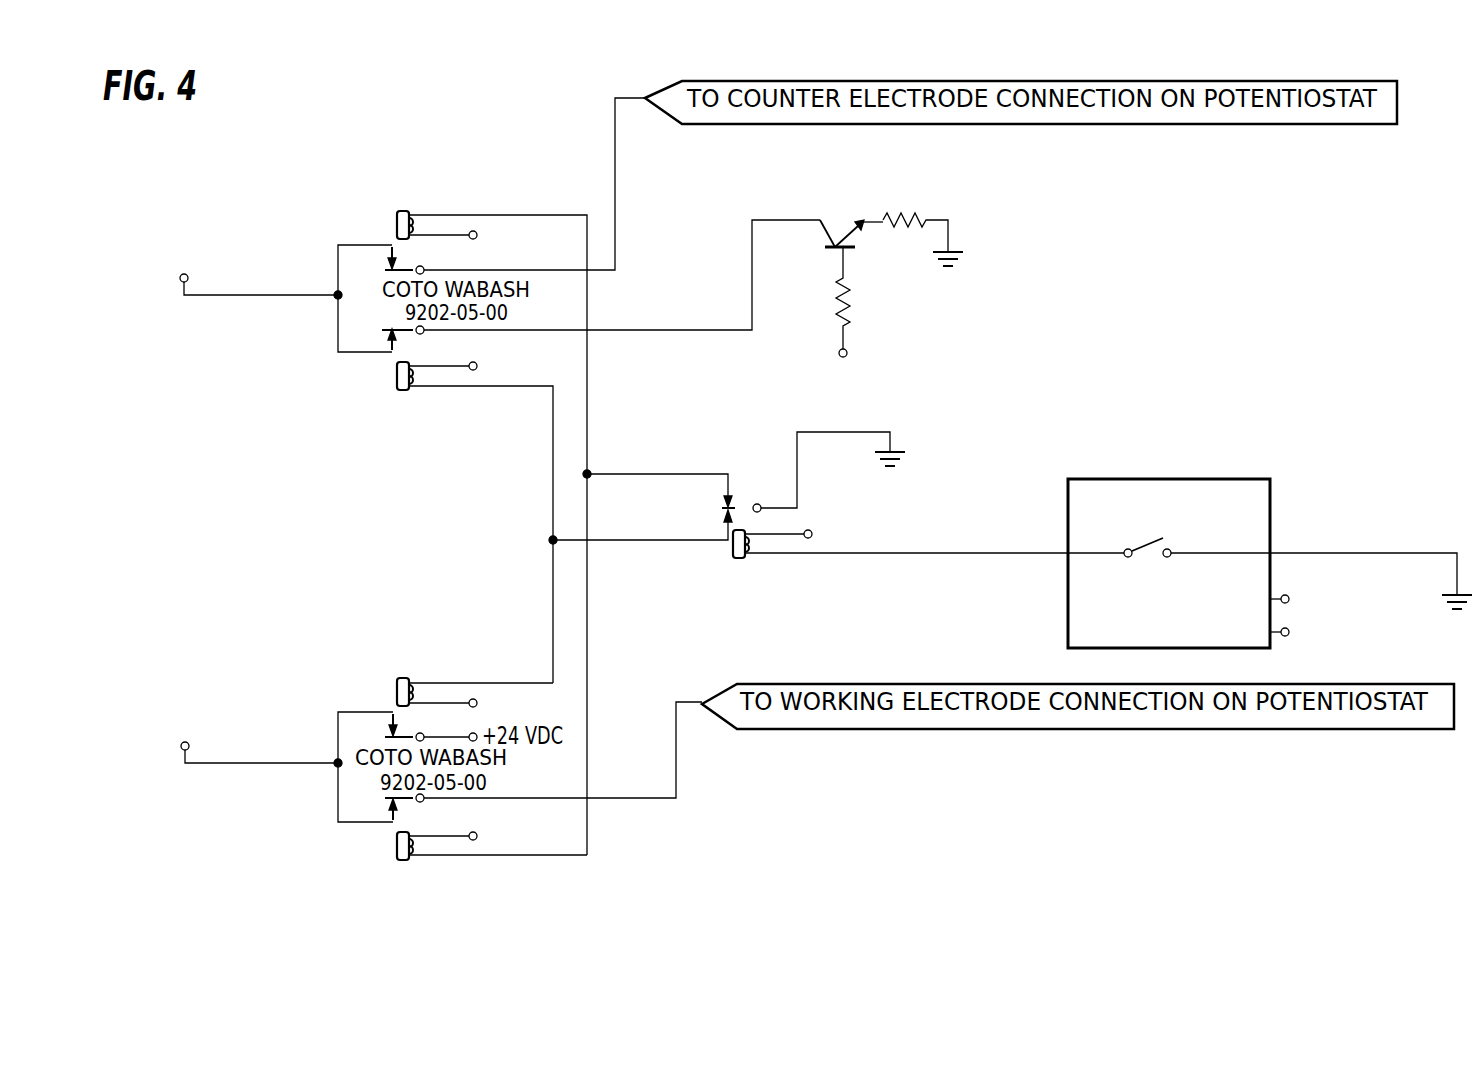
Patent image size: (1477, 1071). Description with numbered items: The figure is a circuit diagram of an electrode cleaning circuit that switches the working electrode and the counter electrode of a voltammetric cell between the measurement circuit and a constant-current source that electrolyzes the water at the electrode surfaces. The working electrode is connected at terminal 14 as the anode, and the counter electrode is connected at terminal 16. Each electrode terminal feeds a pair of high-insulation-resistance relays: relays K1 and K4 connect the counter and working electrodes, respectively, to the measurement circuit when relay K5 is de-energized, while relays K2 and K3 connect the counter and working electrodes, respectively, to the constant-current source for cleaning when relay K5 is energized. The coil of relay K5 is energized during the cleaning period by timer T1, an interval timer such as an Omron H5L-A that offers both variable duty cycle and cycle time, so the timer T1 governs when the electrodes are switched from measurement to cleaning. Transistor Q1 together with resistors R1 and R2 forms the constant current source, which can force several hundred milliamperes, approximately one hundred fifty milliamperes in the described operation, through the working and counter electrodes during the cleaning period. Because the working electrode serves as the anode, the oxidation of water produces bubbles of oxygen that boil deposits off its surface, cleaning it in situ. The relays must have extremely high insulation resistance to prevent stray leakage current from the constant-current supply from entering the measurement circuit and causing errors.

The terminal 16 is at (228, 272).
The terminal 14 is at (228, 739).
The relay K1 is at (489, 516).
The relay K2 is at (477, 517).
The relay K3 is at (472, 681).
The relay K4 is at (489, 858).
The relay K5 is at (836, 525).
The transistor Q1 is at (815, 203).
The resistor R1 is at (908, 196).
The resistor R2 is at (853, 319).
The timer T1 is at (1270, 534).